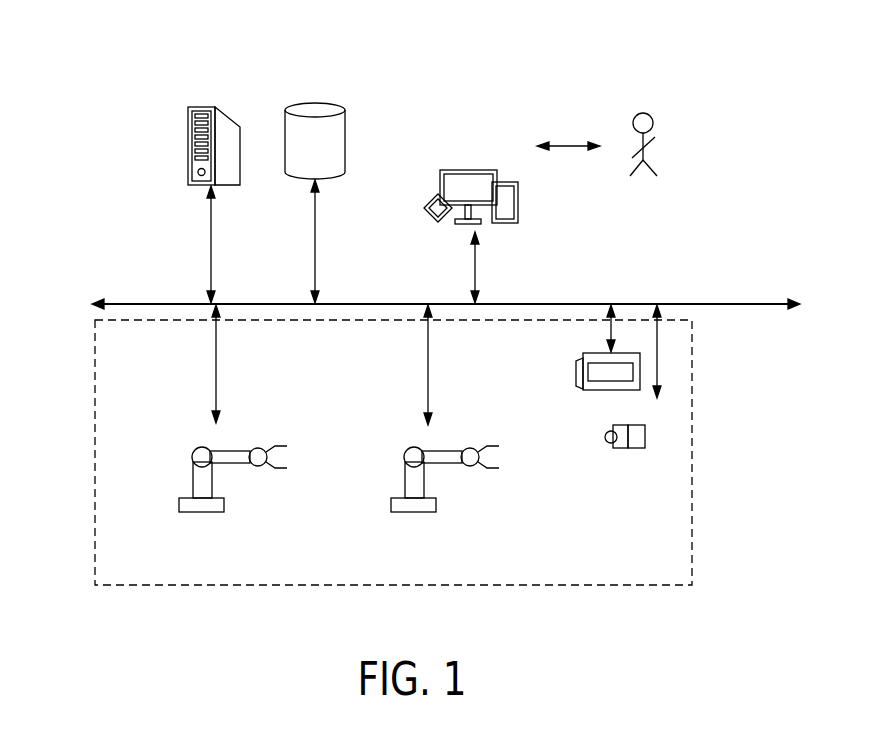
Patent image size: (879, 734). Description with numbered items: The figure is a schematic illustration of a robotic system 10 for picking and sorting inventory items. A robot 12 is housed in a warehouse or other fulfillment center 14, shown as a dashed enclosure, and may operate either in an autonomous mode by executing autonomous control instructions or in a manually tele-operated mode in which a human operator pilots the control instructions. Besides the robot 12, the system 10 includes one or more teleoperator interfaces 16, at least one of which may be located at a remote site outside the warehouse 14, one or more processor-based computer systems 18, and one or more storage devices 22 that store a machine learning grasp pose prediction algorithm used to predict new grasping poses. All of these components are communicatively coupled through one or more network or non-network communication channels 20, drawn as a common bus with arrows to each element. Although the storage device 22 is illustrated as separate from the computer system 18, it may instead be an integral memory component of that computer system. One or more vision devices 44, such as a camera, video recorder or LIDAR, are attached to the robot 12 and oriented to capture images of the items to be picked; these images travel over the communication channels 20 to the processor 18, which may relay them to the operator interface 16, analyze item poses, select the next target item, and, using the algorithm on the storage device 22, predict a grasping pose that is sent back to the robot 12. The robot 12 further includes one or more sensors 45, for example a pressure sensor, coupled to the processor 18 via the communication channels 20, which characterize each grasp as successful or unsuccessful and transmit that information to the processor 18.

The robotic system 10 is at (96, 146).
The robot 12 is at (241, 450).
The warehouse or other fulfillment center 14 is at (114, 561).
The teleoperator interface 16 is at (465, 170).
The computer system 18 is at (205, 107).
The network or non-network communication channels 20 is at (186, 298).
The storage device 22 is at (313, 103).
The vision device 44 is at (642, 372).
The sensor 45 is at (645, 435).